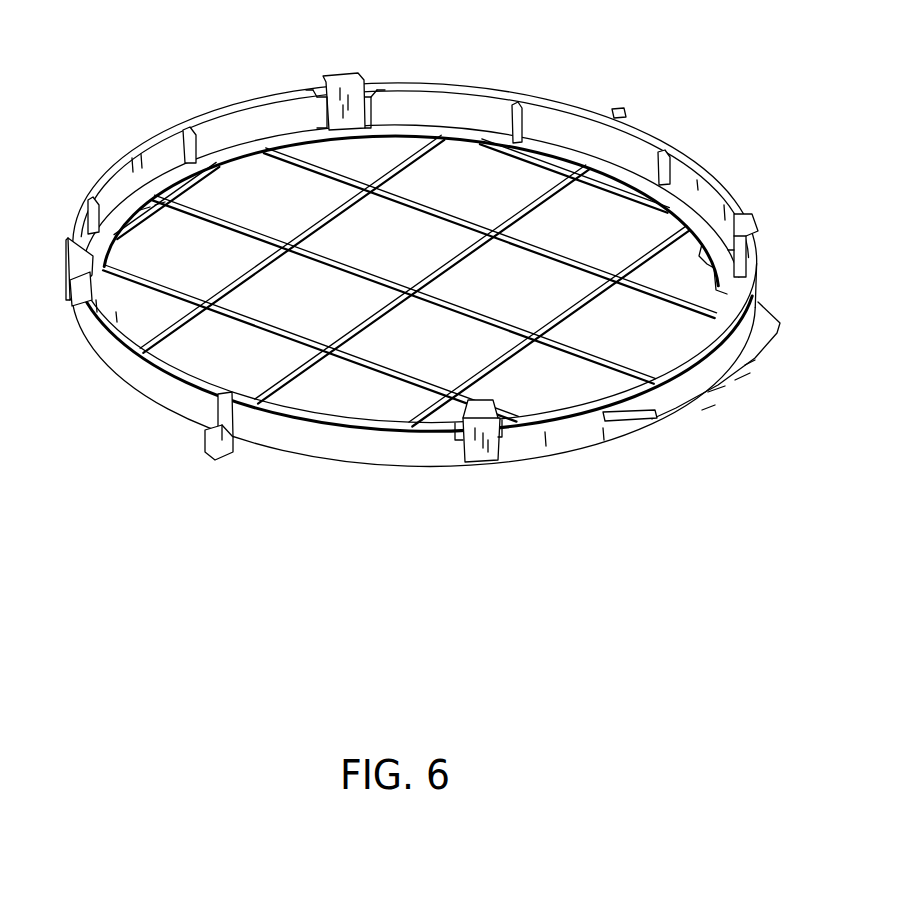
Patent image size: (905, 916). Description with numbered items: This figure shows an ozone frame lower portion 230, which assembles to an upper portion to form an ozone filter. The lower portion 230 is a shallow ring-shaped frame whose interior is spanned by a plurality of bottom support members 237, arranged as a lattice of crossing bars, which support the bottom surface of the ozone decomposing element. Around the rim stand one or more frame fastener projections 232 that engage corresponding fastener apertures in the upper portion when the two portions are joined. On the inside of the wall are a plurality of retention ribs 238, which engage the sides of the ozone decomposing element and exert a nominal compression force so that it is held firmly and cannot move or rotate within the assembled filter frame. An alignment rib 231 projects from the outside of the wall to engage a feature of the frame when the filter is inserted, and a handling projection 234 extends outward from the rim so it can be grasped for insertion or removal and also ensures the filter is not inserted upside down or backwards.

The ozone frame lower portion 230 is at (134, 500).
The alignment rib 231 is at (228, 452).
The frame fastener projection 232 is at (345, 72).
The handling projection 234 is at (761, 356).
The bottom support member 237 is at (556, 198).
The retention rib 238 is at (190, 128).